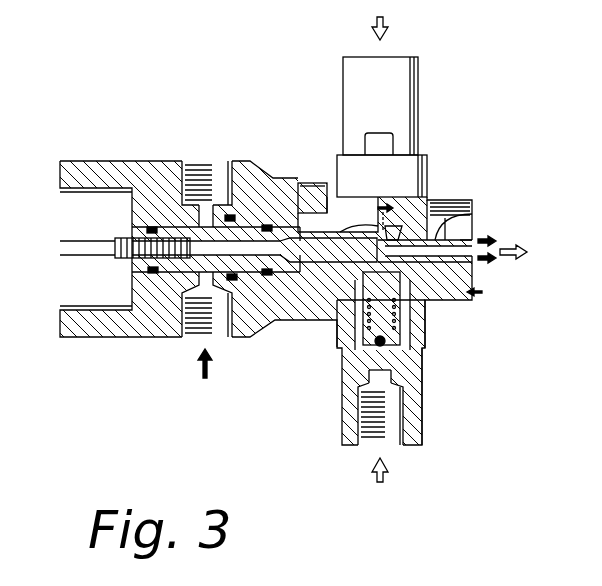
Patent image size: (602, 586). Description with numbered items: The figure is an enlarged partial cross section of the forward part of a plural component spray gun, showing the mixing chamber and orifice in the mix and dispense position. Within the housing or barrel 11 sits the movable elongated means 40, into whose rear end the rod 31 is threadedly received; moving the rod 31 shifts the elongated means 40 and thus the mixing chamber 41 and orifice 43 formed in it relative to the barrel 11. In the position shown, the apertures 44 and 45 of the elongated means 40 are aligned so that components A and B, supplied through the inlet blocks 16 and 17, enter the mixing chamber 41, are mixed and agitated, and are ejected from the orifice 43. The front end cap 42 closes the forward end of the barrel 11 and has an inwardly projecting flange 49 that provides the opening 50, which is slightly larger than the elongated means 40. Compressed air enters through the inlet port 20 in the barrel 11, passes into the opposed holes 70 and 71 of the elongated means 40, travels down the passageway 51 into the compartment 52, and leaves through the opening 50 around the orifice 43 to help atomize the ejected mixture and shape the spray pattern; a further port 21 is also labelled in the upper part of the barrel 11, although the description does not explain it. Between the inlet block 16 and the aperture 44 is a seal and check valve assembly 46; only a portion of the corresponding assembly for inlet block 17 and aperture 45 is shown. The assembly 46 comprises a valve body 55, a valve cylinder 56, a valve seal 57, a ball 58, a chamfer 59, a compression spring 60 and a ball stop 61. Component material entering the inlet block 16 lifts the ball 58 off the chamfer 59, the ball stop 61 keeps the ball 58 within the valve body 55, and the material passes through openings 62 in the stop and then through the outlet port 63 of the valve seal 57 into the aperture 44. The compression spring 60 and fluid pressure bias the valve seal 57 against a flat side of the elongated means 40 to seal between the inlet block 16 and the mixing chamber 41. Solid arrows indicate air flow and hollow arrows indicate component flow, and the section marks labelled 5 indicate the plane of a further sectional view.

The barrel 11 is at (100, 161).
The inlet block 17 is at (343, 75).
The inlet port 21 is at (207, 161).
The hole 70 is at (222, 178).
The elongated means 40 is at (264, 168).
The aperture 45 is at (373, 230).
The valve seal 57 is at (427, 318).
The section line 5- 5 is at (435, 251).
The outlet port 63 is at (405, 205).
The mixing chamber 41 is at (443, 200).
The front end cap 42 is at (470, 212).
The compartment 52 is at (472, 233).
The orifice 43 is at (474, 253).
The opening 50 is at (474, 262).
The flange 49 is at (474, 268).
The valve cylinder 56 is at (425, 328).
The ball 58 is at (425, 345).
The chamfer 59 is at (423, 350).
The openings 62 is at (352, 320).
The seal and check valve assembly 46 is at (393, 365).
The valve body 55 is at (367, 348).
The ball stop 61 is at (360, 370).
The inlet block 16 is at (345, 430).
The compression spring 60 is at (348, 333).
The aperture 44 is at (312, 322).
The hole 71 is at (200, 257).
The passageway 51 is at (223, 253).
The rod 31 is at (62, 240).
The inlet port 20 is at (210, 338).